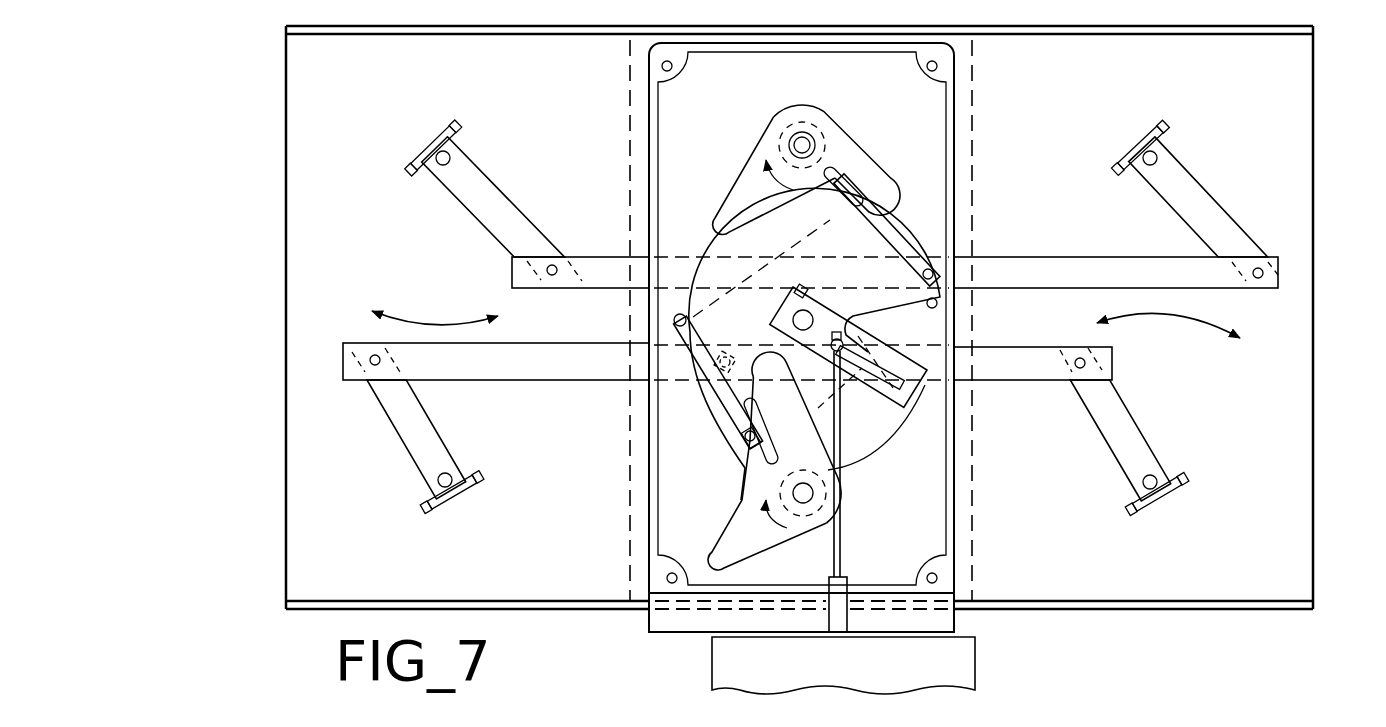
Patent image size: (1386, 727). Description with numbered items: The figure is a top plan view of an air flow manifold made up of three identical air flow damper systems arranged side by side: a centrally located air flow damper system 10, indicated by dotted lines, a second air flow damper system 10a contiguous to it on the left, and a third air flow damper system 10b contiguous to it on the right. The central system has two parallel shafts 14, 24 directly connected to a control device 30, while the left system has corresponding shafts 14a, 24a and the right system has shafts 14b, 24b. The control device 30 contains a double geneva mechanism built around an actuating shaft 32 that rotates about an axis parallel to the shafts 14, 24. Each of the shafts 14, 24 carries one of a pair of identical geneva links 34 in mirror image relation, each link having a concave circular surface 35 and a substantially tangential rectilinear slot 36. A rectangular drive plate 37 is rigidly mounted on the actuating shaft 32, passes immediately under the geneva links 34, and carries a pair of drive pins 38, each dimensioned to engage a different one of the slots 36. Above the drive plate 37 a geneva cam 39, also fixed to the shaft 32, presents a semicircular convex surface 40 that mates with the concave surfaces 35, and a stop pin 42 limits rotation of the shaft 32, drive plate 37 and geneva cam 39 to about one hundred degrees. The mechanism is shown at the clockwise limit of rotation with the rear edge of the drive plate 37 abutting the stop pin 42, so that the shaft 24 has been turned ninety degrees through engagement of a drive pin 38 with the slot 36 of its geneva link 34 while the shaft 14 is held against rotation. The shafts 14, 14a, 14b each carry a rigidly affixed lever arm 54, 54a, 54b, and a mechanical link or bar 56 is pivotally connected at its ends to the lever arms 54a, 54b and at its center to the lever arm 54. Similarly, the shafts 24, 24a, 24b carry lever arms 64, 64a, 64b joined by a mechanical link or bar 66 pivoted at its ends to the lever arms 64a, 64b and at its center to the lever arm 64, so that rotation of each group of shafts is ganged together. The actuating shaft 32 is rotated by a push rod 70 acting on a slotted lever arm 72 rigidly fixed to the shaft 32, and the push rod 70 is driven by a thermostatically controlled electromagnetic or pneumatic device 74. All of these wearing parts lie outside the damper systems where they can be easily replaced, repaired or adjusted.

The air flow damper system 10 is at (627, 528).
The second air flow damper system 10a is at (284, 314).
The third air flow damper system 10b is at (1315, 495).
The shaft 14 is at (805, 143).
The shaft 14a is at (453, 154).
The shaft 14b is at (1159, 155).
The shaft 24 is at (813, 496).
The shaft 24a is at (460, 474).
The shaft 24b is at (1156, 468).
The control device 30 is at (698, 246).
The actuating shaft 32 is at (846, 290).
The geneva link 34 is at (845, 136).
The concave circular surface 35 is at (760, 212).
The rectilinear slot 36 is at (846, 182).
The drive plate 37 is at (898, 328).
The drive pin 38 is at (940, 305).
The geneva cam 39 is at (763, 328).
The semicircular convex surface 40 is at (710, 258).
The stop pin 42 is at (674, 320).
The lever arm 54 is at (909, 233).
The lever arm 54a is at (497, 184).
The lever arm 54b is at (1198, 184).
The mechanical link or bar 56 is at (1080, 258).
The lever arm 64 is at (727, 422).
The lever arm 64a is at (400, 437).
The lever arm 64b is at (1105, 434).
The mechanical link or bar 66 is at (527, 382).
The push rod 70 is at (843, 455).
The slotted lever arm 72 is at (912, 392).
The thermostatically controlled electromagnetic or pneumatic device 74 is at (977, 665).